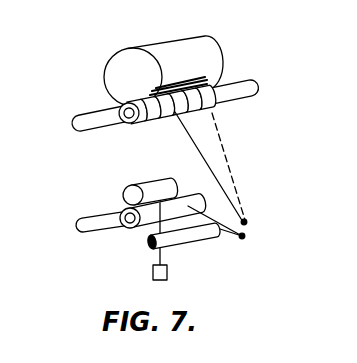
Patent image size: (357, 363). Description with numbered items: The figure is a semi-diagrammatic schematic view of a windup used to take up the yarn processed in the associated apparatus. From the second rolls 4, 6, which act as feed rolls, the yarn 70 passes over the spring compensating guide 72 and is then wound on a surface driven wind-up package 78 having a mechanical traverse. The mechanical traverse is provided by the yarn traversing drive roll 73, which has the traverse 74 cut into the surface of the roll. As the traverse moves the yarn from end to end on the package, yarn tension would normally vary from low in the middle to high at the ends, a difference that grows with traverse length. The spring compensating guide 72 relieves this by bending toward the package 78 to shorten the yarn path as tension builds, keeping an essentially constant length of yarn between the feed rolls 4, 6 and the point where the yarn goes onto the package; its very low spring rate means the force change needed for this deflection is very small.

The wind-up package 78 is at (201, 41).
The yarn traversing drive roll 73 is at (134, 130).
The traverse 74 is at (169, 124).
The second roll 6 is at (125, 200).
The second roll 4 is at (143, 232).
The yarn 70 is at (156, 256).
The spring compensating guide 72 is at (216, 241).